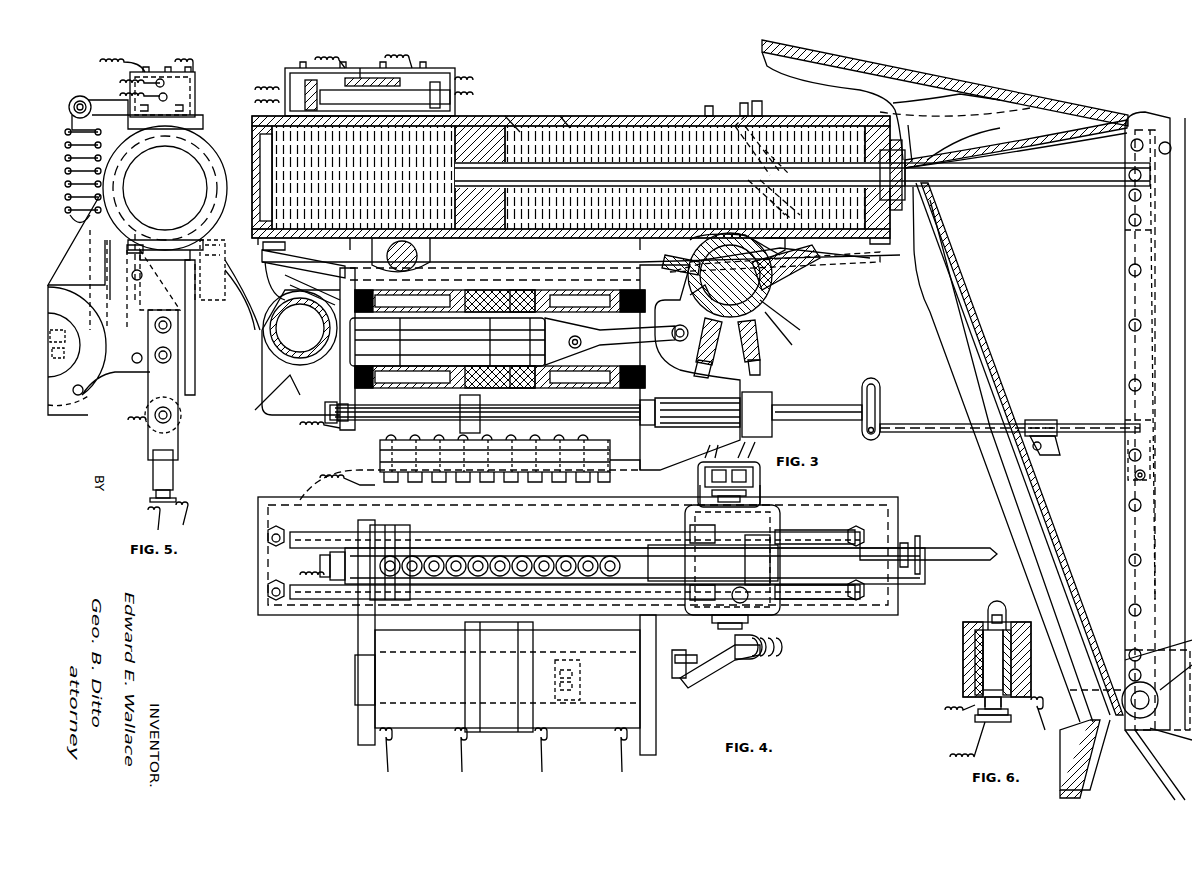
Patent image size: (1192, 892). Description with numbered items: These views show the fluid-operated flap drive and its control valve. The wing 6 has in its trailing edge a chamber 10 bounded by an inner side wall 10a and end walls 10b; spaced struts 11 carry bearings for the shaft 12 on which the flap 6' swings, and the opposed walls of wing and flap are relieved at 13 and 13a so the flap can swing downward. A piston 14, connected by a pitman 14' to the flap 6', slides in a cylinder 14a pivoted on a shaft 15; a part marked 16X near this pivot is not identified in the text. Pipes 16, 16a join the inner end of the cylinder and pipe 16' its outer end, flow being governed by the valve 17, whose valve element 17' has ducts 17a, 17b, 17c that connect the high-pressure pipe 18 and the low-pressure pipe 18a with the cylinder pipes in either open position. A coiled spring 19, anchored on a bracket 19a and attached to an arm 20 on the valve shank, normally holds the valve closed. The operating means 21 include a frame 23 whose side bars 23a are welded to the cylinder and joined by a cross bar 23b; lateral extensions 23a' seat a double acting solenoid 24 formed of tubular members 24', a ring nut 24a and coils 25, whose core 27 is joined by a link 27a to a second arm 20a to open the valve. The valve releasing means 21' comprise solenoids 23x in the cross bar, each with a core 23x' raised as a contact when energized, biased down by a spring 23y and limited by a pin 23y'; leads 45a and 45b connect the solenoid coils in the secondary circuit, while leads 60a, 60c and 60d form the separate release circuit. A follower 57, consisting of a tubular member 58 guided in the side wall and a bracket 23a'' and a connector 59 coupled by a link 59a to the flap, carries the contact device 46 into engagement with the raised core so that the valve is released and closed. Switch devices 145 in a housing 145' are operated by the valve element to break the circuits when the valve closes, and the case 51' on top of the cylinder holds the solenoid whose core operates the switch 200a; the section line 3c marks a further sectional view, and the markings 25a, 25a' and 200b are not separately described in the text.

In FIG. 5, the section line 3c is at (163, 405).
In FIG. 3, the wing 6 is at (394, 438).
In FIG. 6, the wing 6 is at (945, 104).
In FIG. 6, the flap 6' is at (1123, 365).
In FIG. 6, the recess or chamber 10 is at (985, 320).
In FIG. 6, the inner side wall 10a is at (1060, 550).
In FIG. 6, the end walls 10b is at (1125, 128).
In FIG. 6, the struts 11 is at (1075, 685).
In FIG. 6, the shaft 12 is at (1140, 718).
In FIG. 6, the relieved portion of wing wall 13 is at (1095, 765).
In FIG. 6, the relieved portion of flap wall 13a is at (1160, 765).
In FIG. 3, the piston 14 is at (578, 170).
In FIG. 3, the pitman 14' is at (745, 183).
In FIG. 6, the pitman 14' is at (1027, 183).
In FIG. 3, the cylinder 14a is at (540, 128).
In FIG. 5, the cylinder 14a is at (198, 140).
In FIG. 3, the shaft 15 is at (412, 250).
In FIG. 3, the pipe 16 is at (782, 262).
In FIG. 4, the pipe 16 is at (886, 539).
In FIG. 3, the pipe 16' is at (581, 252).
In FIG. 4, the pipe 16' is at (578, 550).
In FIG. 4, the pipe 16a is at (335, 590).
In FIG. 3, the bearing 16X is at (285, 392).
In FIG. 3, the valve 17 is at (741, 276).
In FIG. 4, the valve 17 is at (714, 557).
In FIG. 3, the valve element 17' is at (790, 328).
In FIG. 3, the duct 17a is at (695, 295).
In FIG. 3, the duct 17b is at (695, 255).
In FIG. 3, the duct 17c is at (770, 305).
In FIG. 3, the pipe 18 is at (698, 364).
In FIG. 3, the pipe 18a is at (760, 352).
In FIG. 3, the coiled spring 19 is at (770, 126).
In FIG. 4, the coiled spring 19 is at (778, 660).
In FIG. 5, the coiled spring 19 is at (68, 184).
In FIG. 5, the bracket 19a is at (70, 112).
In FIG. 3, the arm 20 is at (785, 245).
In FIG. 5, the arm 20 is at (62, 255).
In FIG. 3, the arm 20a is at (680, 340).
In FIG. 4, the arm 20a is at (712, 668).
In FIG. 3, the operating means 21 is at (403, 352).
In FIG. 3, the valve releasing means 21' is at (605, 422).
In FIG. 3, the frame 23 is at (495, 261).
In FIG. 3, the side bars 23a is at (501, 371).
In FIG. 4, the side bars 23a is at (666, 685).
In FIG. 4, the lateral extensions 23a' is at (346, 634).
In FIG. 5, the lateral extensions 23a' is at (99, 358).
In FIG. 3, the bracket 23a'' is at (765, 403).
In FIG. 3, the cross bar 23b is at (645, 470).
In FIG. 4, the cross bar 23b is at (455, 550).
In FIG. 6, the cross bar 23b is at (968, 660).
In FIG. 6, the solenoid 23x is at (961, 662).
In FIG. 3, the core 23x' is at (495, 455).
In FIG. 6, the core 23x' is at (984, 613).
In FIG. 6, the spring 23y is at (961, 724).
In FIG. 6, the pin 23y' is at (1013, 608).
In FIG. 3, the double acting solenoid 24 is at (500, 334).
In FIG. 3, the tubular members 24' is at (382, 334).
In FIG. 3, the ring nut 24a is at (470, 300).
In FIG. 4, the ring nut 24a is at (505, 722).
In FIG. 3, the coil 25 is at (435, 390).
In FIG. 4, the coil 25 is at (435, 718).
In FIG. 3, the switch 25a is at (403, 85).
In FIG. 3, the switch contact 25a' is at (392, 88).
In FIG. 3, the core 27 is at (535, 300).
In FIG. 4, the core 27 is at (355, 695).
In FIG. 3, the link 27a is at (620, 334).
In FIG. 4, the link 27a is at (660, 665).
In FIG. 6, the lead 45a is at (945, 712).
In FIG. 6, the lead 45b is at (1048, 730).
In FIG. 3, the contact device 46 is at (460, 430).
In FIG. 3, the case 51' is at (366, 56).
In FIG. 6, the follower 57 is at (1010, 440).
In FIG. 3, the tubular member 58 is at (795, 405).
In FIG. 6, the connector 59 is at (1060, 428).
In FIG. 6, the link 59a is at (1128, 460).
In FIG. 3, the lead 60a is at (416, 58).
In FIG. 5, the lead 60a is at (195, 60).
In FIG. 3, the leads 60c is at (315, 60).
In FIG. 6, the leads 60c is at (950, 757).
In FIG. 5, the leads 60c is at (105, 62).
In FIG. 3, the lead 60d is at (300, 428).
In FIG. 3, the switch devices 145 is at (672, 489).
In FIG. 4, the switch devices 145 is at (672, 489).
In FIG. 3, the housing 145' is at (749, 474).
In FIG. 4, the housing 145' is at (787, 479).
In FIG. 5, the housing 145' is at (222, 327).
In FIG. 5, the switch 200a is at (250, 100).
In FIG. 5, the wire 200b is at (250, 86).